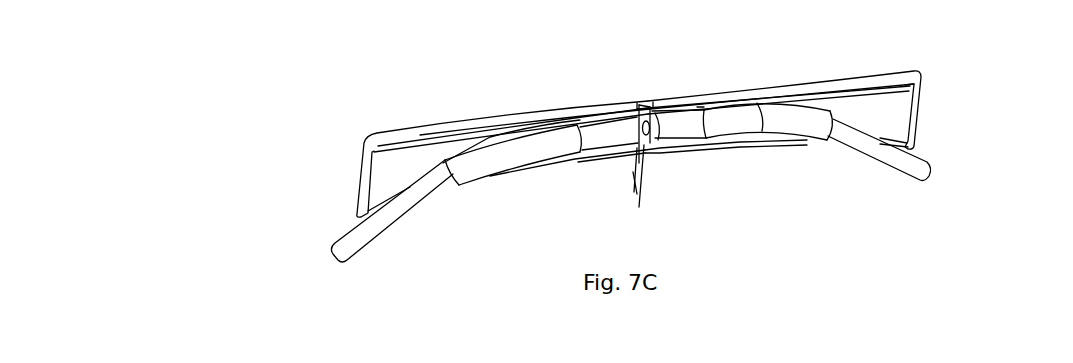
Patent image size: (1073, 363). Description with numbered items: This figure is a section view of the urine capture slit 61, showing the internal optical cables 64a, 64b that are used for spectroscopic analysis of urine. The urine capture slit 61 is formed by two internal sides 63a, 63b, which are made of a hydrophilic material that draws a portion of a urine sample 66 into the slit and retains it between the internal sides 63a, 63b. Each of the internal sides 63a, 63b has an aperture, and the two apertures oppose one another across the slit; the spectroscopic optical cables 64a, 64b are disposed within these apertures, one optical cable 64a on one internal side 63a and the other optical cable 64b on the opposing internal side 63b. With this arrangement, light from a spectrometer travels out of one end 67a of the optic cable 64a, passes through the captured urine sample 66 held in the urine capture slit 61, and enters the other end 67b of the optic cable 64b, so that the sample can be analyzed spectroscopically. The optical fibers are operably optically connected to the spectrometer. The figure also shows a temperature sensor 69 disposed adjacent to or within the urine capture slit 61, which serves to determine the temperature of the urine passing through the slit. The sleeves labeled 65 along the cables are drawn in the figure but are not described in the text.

The urine capture slit 61 is at (632, 90).
The internal side 63a is at (613, 133).
The internal side 63b is at (683, 113).
The optical cable 64a is at (613, 136).
The optical cable 64b is at (773, 113).
The cable with sleeve 65 is at (511, 158).
The urine sample 66 is at (649, 146).
The end of optic cable 67a is at (573, 150).
The end of optic cable 67b is at (664, 126).
The temperature sensor 69 is at (628, 168).